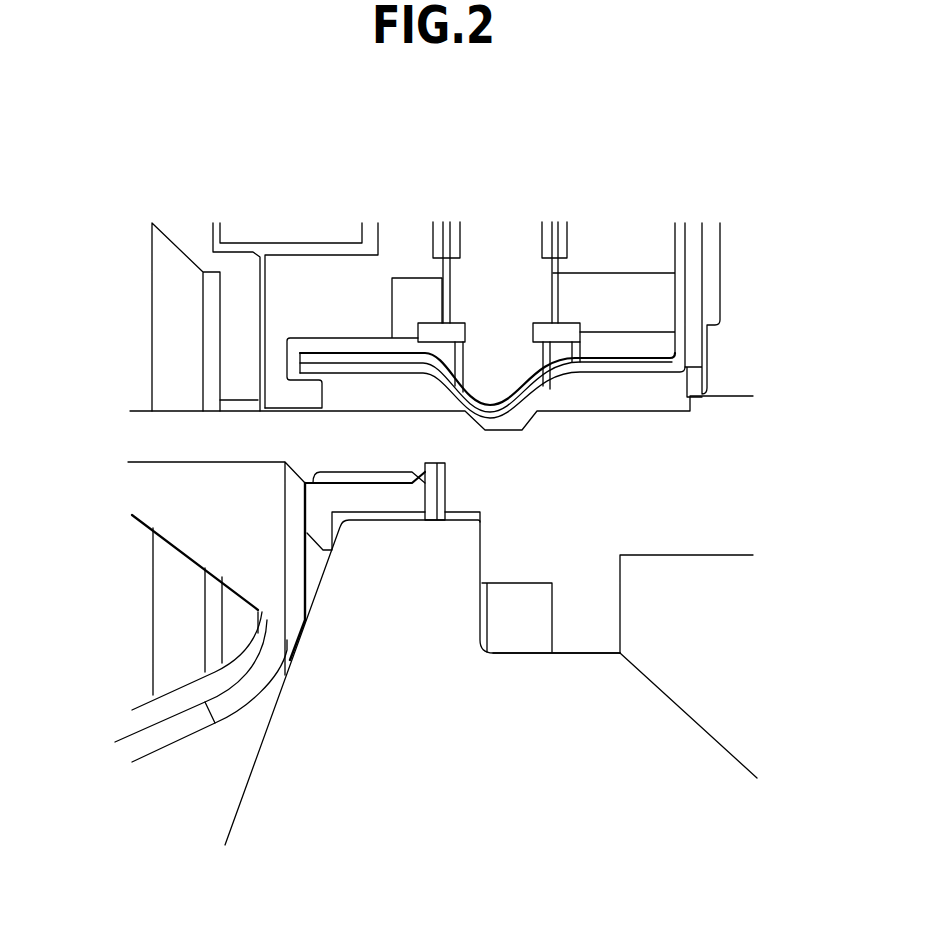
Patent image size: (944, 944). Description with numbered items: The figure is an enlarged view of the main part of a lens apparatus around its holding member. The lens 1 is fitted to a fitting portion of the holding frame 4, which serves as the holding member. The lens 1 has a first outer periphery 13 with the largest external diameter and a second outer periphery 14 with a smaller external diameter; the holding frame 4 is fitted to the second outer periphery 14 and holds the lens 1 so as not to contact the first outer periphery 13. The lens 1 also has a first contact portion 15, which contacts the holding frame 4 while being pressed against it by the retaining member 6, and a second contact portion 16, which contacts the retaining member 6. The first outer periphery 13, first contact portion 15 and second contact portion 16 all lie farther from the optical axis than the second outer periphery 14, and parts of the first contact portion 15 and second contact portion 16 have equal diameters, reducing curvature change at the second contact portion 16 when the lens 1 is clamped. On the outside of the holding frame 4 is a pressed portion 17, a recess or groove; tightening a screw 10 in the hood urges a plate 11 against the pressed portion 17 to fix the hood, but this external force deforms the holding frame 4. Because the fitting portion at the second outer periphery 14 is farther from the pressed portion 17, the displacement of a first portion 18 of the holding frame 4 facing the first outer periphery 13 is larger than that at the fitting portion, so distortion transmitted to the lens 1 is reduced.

The lens 1 is at (438, 783).
The holding frame 4 is at (682, 490).
The retaining member 6 is at (323, 498).
The screw 10 is at (507, 280).
The plate 11 is at (573, 323).
The first outer periphery 13 is at (395, 520).
The second outer periphery 14 is at (585, 653).
The first contact portion 15 is at (480, 545).
The second contact portion 16 is at (270, 547).
The pressed portion 17 is at (502, 420).
The first portion 18 is at (463, 507).